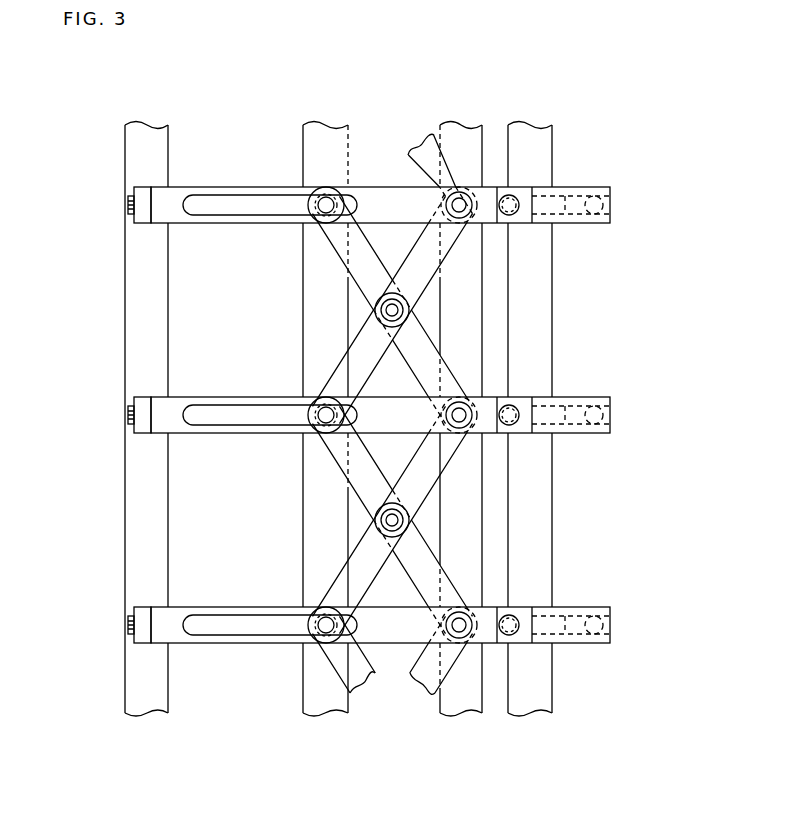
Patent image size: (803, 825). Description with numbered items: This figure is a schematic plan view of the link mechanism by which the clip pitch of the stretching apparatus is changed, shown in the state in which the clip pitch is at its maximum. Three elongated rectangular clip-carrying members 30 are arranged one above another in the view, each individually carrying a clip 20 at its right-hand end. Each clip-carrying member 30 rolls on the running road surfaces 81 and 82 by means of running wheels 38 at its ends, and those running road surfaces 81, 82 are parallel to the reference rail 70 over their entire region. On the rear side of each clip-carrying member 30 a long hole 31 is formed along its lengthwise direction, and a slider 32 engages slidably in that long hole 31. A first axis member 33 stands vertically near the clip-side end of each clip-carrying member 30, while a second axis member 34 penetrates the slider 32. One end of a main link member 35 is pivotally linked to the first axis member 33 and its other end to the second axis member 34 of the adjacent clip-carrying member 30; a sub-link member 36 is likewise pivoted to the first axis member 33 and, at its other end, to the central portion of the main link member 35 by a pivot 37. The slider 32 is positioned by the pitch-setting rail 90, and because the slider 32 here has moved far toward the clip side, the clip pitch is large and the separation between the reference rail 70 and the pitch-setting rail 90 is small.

The clip 20 is at (567, 173).
The clip-carrying member 30 is at (208, 228).
The long hole 31 is at (221, 200).
The slider 32 is at (315, 191).
The first axis member 33 is at (461, 193).
The second axis member 34 is at (315, 217).
The main link member 35 is at (450, 373).
The sub-link member 36 is at (448, 247).
The pivot 37 is at (384, 327).
The running wheel 38 is at (143, 223).
The reference rail 70 is at (470, 697).
The running road surface 81 is at (537, 683).
The running road surface 82 is at (148, 703).
The pitch-setting rail 90 is at (328, 700).